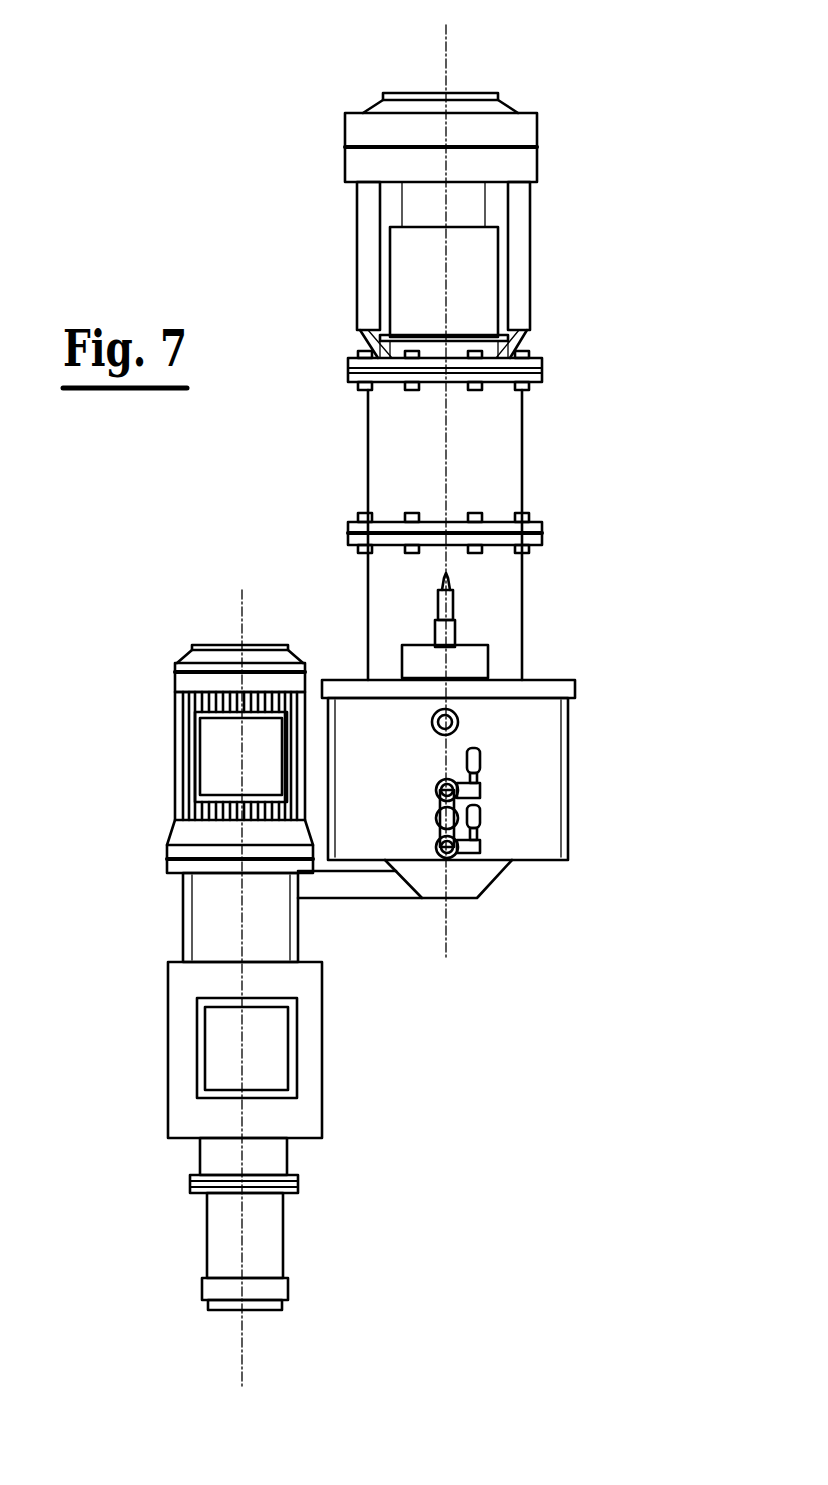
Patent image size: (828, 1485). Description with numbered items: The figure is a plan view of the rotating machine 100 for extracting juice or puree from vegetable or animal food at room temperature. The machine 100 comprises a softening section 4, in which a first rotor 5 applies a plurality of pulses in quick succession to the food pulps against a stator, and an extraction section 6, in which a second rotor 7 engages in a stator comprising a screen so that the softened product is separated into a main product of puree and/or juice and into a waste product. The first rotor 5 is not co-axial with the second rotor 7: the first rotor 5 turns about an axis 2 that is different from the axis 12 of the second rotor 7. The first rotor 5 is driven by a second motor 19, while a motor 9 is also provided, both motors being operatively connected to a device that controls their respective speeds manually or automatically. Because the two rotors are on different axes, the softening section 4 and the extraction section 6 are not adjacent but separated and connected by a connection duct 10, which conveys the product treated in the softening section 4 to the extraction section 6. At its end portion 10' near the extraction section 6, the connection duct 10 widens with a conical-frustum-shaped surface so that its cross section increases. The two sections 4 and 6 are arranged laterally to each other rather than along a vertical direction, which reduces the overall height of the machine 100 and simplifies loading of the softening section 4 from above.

The axis 2 is at (245, 1348).
The first section 4 is at (182, 935).
The first rotor 5 is at (192, 910).
The second section 6 is at (541, 626).
The second rotor 7 is at (560, 773).
The motor 9 is at (187, 717).
The connection duct 10 is at (360, 921).
The end portion 10' is at (479, 906).
The axis 12 is at (447, 65).
The second motor 19 is at (528, 242).
The machine 100 is at (576, 1054).